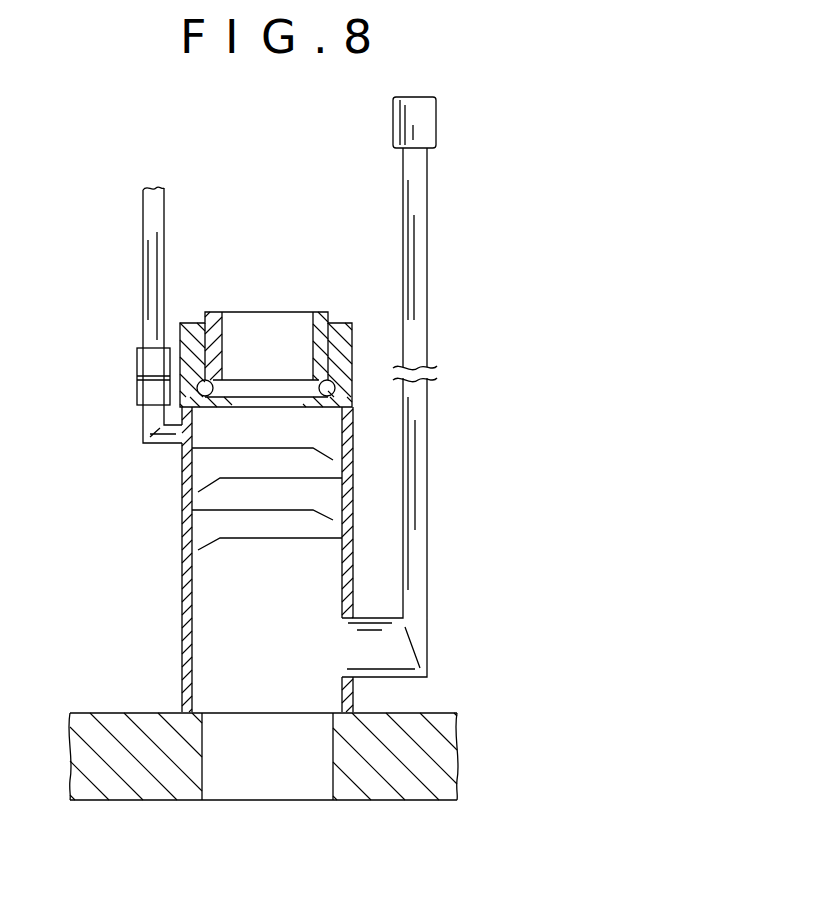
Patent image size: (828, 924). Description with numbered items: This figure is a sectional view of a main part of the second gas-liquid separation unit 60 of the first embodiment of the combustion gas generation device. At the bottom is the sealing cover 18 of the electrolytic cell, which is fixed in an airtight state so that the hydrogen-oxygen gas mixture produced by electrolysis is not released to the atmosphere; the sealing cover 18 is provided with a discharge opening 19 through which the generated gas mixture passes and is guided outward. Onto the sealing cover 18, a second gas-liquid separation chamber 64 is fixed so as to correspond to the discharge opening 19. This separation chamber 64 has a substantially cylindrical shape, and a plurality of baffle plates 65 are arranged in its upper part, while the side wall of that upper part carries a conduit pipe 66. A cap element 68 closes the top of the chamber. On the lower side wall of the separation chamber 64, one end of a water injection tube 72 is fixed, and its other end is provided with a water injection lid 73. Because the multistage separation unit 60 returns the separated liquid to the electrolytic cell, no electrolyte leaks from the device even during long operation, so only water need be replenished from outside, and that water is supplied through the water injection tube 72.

The second gas-liquid separation unit 60 is at (259, 404).
The second gas-liquid separation chamber 64 is at (182, 480).
The baffle plates 65 is at (267, 540).
The conduit pipe 66 is at (147, 222).
The cap 68 is at (340, 323).
The water injection tube 72 is at (428, 472).
The water injection lid 73 is at (432, 118).
The sealing cover 18 is at (418, 800).
The discharge opening 19 is at (254, 800).